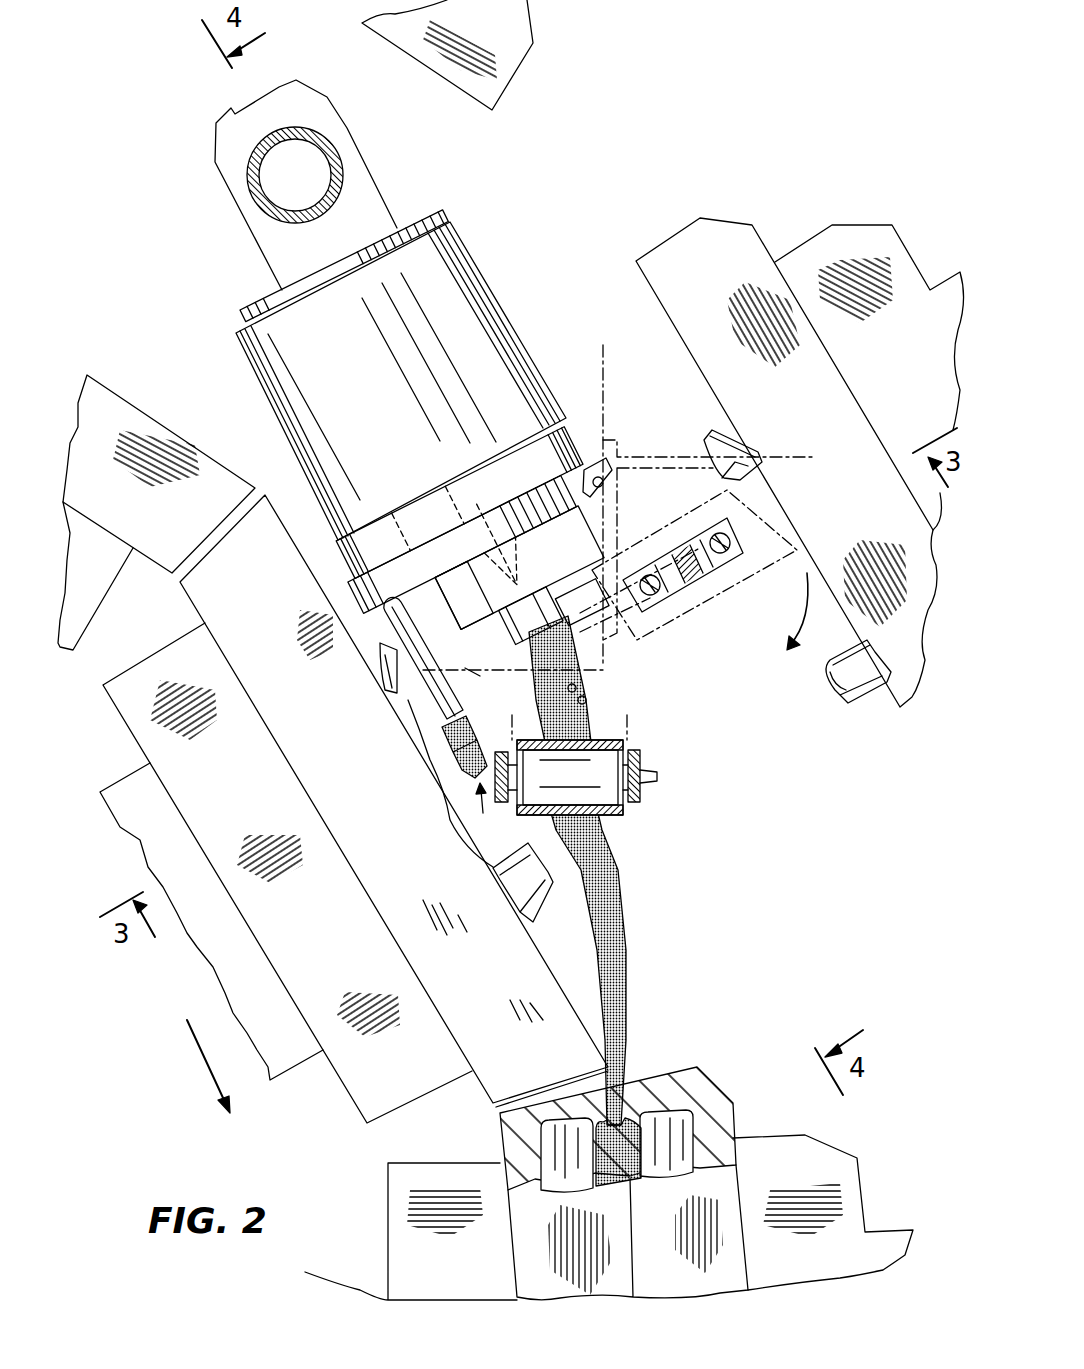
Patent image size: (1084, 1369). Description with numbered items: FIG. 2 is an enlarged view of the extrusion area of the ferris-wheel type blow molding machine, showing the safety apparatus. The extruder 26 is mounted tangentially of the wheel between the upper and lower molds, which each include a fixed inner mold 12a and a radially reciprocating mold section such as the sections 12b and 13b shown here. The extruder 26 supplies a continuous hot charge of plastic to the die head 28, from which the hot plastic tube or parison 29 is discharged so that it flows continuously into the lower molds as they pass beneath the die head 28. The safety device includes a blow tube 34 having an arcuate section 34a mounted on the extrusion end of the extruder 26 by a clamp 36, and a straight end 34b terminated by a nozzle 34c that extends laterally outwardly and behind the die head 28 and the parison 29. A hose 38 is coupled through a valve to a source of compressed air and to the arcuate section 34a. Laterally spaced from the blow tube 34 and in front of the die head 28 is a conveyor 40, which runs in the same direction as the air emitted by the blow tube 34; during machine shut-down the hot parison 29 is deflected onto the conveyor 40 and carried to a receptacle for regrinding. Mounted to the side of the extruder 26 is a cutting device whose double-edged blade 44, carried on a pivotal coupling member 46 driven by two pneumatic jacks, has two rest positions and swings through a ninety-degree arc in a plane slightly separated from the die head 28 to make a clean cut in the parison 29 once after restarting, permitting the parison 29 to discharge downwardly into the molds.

The fixed inner mold 12a is at (487, 1067).
The radially reciprocating mold section 12b is at (785, 203).
The radially reciprocating mold section 13b is at (777, 1078).
The extruder 26 is at (496, 300).
The die head 28 is at (577, 597).
The hot plastic tube (parison) 29 is at (630, 910).
The blow tube 34 is at (430, 718).
The arcuate section 34a is at (485, 664).
The straight end 34b is at (641, 702).
The nozzle 34c is at (588, 702).
The clamp 36 is at (583, 472).
The hose 38 is at (462, 762).
The conveyor 40 is at (597, 787).
The double-edged blade 44 is at (474, 680).
The pivotal coupling member 46 is at (667, 555).